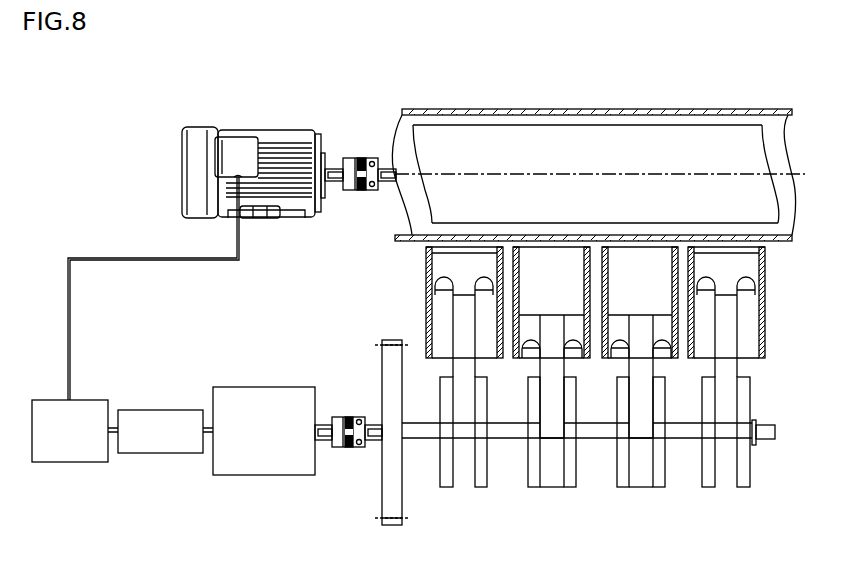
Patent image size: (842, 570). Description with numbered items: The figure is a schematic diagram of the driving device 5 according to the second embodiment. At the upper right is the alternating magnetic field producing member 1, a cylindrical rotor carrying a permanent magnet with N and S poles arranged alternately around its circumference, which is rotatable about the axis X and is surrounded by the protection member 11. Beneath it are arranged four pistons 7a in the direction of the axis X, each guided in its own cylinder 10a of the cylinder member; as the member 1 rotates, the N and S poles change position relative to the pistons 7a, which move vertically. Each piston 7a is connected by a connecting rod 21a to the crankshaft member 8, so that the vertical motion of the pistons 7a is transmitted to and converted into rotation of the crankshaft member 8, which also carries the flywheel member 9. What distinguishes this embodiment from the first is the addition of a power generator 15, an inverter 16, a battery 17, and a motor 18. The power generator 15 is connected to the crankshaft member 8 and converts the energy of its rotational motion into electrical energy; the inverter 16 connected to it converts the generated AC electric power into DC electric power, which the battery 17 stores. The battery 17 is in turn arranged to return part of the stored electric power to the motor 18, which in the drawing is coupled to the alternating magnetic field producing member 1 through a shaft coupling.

The driving device 5 is at (747, 60).
The alternating magnetic field producing member 1 is at (682, 145).
The protection member 11 is at (605, 108).
The piston 7a is at (445, 264).
The cylinder 10a is at (427, 282).
The connecting rod 21a is at (468, 369).
The crankshaft member 8 is at (775, 432).
The flywheel member 9 is at (392, 397).
The motor 18 is at (279, 137).
The battery 17 is at (86, 398).
The inverter 16 is at (152, 408).
The power generator 15 is at (281, 386).